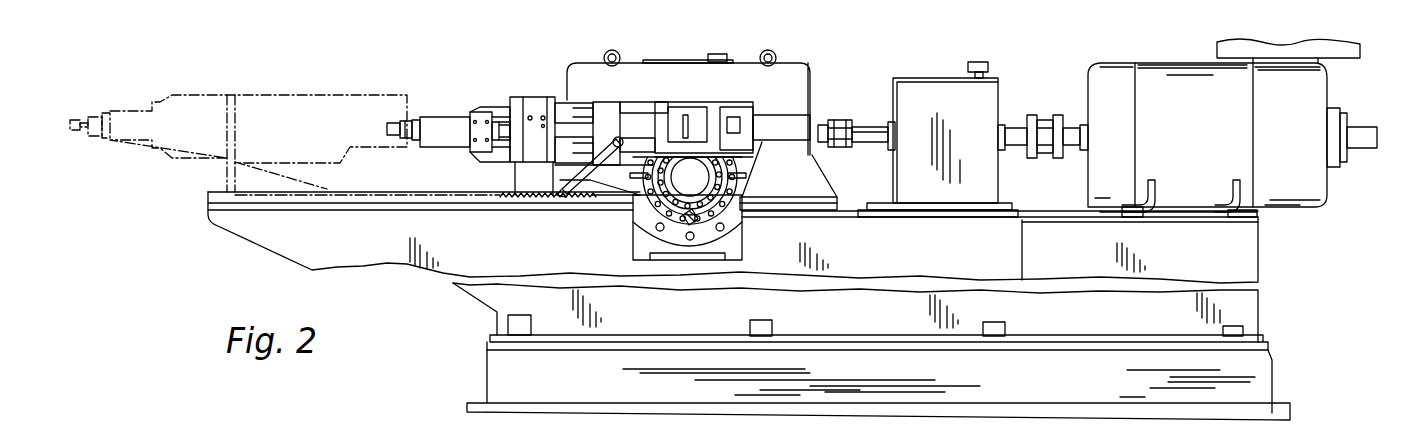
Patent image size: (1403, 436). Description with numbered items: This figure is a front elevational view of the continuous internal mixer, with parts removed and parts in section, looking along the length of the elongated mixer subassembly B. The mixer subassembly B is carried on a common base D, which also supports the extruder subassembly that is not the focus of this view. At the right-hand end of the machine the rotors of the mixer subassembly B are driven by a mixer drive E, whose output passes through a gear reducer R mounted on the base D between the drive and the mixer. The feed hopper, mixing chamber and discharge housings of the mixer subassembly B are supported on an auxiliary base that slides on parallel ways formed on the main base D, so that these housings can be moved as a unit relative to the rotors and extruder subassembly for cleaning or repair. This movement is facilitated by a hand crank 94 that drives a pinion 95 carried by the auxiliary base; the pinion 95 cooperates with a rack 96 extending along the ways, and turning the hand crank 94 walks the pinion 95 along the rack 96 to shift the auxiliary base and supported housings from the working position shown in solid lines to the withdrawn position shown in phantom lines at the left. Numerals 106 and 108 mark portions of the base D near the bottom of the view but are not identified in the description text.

The mixer subassembly B is at (315, 92).
The gear reducer R is at (926, 101).
The mixer drive E is at (1174, 58).
The common base D is at (481, 304).
The hand crank 94 is at (590, 188).
The pinion 95 is at (557, 198).
The rack 96 is at (515, 200).
The sub-base 106 is at (879, 385).
The base plate 108 is at (878, 419).